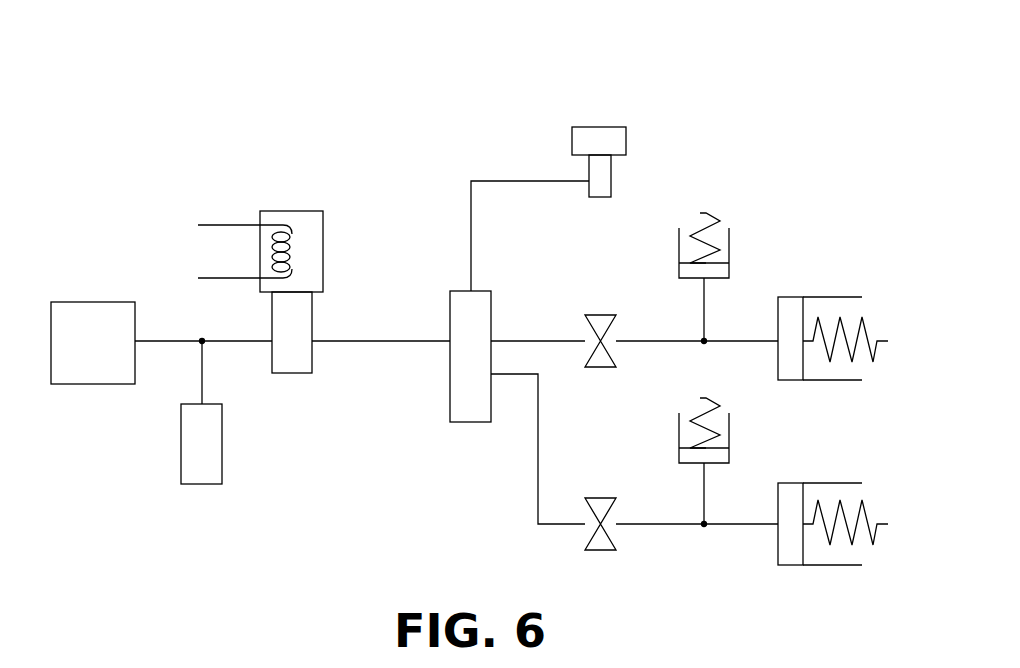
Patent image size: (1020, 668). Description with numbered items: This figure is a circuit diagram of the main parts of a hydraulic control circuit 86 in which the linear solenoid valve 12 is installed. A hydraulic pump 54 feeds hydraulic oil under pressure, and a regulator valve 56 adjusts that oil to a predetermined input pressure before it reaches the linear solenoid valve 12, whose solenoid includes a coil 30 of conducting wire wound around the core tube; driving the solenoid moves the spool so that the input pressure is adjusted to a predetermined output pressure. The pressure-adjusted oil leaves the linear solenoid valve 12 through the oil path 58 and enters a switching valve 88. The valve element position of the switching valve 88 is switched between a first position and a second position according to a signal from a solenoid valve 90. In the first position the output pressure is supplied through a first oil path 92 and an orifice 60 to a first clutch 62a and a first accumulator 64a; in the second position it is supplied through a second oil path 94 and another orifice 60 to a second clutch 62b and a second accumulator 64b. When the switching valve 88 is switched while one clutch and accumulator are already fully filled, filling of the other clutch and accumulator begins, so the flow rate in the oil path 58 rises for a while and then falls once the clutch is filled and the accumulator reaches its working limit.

The hydraulic control circuit 86 is at (255, 82).
The hydraulic pump 54 is at (92, 285).
The regulator valve 56 is at (246, 449).
The coil 30 is at (271, 227).
The oil path 58 is at (408, 338).
The linear solenoid valve 12 is at (387, 242).
The switching valve 88 is at (433, 389).
The solenoid valve 90 is at (553, 143).
The first oil path 92 is at (567, 338).
The second oil path 94 is at (538, 467).
The orifice 60 is at (602, 300).
The first accumulator 64a is at (753, 237).
The second accumulator 64b is at (664, 435).
The first clutch 62a is at (833, 395).
The second clutch 62b is at (833, 578).